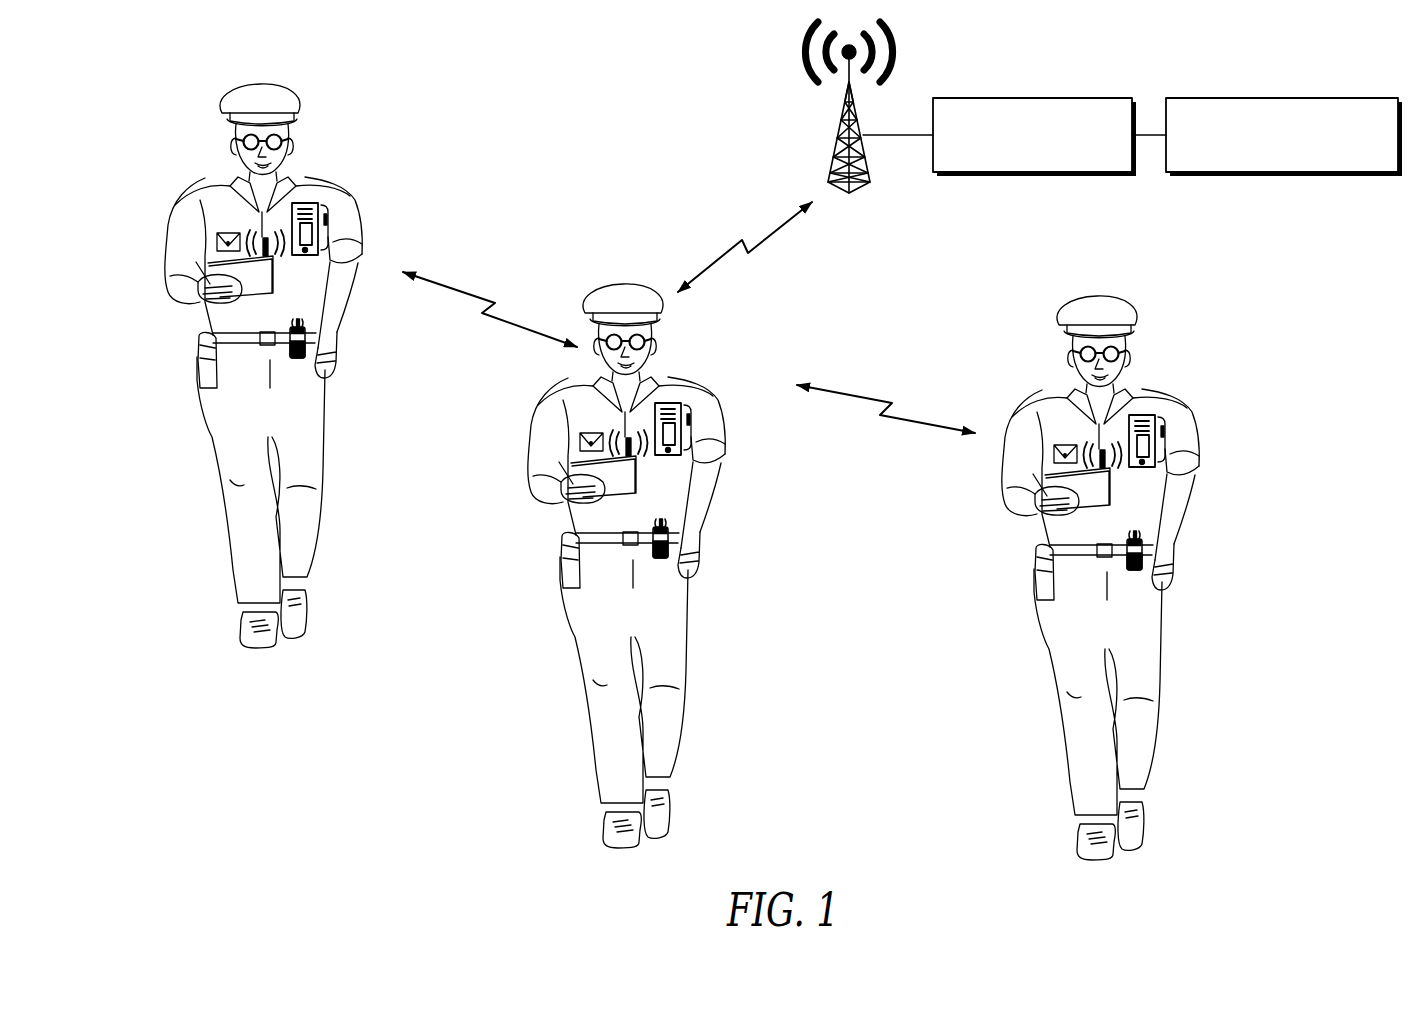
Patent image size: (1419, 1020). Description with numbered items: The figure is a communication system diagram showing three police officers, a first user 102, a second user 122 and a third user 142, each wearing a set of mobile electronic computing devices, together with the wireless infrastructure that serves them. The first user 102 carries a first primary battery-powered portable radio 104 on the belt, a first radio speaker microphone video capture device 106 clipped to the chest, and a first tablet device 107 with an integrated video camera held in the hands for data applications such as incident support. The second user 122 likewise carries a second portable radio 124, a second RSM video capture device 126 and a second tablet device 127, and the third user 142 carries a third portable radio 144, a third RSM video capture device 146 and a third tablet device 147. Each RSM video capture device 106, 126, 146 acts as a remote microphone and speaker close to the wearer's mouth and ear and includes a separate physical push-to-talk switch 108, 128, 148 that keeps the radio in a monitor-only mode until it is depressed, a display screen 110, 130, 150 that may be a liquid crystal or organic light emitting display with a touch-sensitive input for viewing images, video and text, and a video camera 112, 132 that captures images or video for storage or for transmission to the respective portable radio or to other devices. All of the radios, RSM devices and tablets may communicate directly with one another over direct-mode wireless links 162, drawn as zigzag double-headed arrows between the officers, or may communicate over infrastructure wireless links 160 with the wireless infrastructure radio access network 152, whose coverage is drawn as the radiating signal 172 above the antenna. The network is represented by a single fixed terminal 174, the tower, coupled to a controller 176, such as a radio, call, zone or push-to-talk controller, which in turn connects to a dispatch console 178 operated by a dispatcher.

The first user 102 is at (656, 566).
The first portable radio 104 is at (675, 530).
The first RSM video capture device 106 is at (668, 403).
The first tablet device 107 is at (589, 500).
The PTT switch 108 is at (693, 412).
The display screen 110 is at (693, 445).
The video camera 112 is at (669, 453).
The second user 122 is at (1121, 578).
The second portable radio 124 is at (1150, 542).
The second RSM video capture device 126 is at (1142, 415).
The second tablet device 127 is at (1062, 512).
The PTT switch 128 is at (1167, 424).
The display screen 130 is at (1167, 455).
The video camera 132 is at (1143, 465).
The third user 142 is at (284, 366).
The third portable radio 144 is at (312, 330).
The third RSM video capture device 146 is at (305, 203).
The third tablet device 147 is at (226, 300).
The PTT switch 148 is at (330, 212).
The display screen 150 is at (330, 245).
The wireless infrastructure radio access network 152 is at (306, 253).
The infrastructure wireless link 160 is at (782, 230).
The direct-mode wireless link 162 is at (463, 290).
The wireless radio access network 172 is at (785, 50).
The fixed terminal 174 is at (838, 150).
The controller 176 is at (1035, 98).
The dispatch console 178 is at (1282, 98).